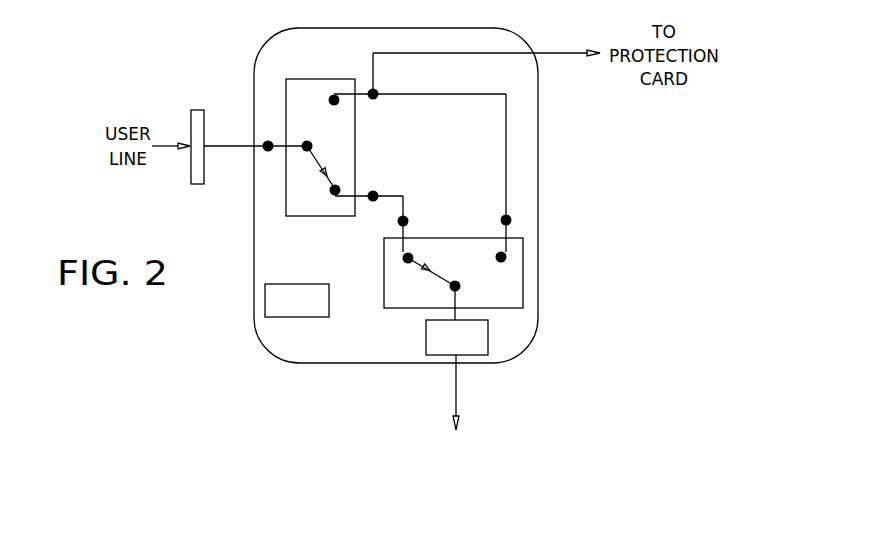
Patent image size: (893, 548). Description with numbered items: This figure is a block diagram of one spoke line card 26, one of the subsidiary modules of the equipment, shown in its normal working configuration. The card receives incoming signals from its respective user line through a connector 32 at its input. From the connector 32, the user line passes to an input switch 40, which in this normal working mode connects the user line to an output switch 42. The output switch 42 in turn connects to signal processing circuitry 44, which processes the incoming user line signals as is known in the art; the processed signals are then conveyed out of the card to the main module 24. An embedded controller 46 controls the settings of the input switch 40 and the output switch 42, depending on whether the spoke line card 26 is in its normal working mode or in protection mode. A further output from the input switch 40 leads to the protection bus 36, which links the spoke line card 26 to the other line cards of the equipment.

The spoke line card 26 is at (270, 42).
The connector 32 is at (205, 124).
The protection bus 36 is at (543, 53).
The input switch 40 is at (320, 216).
The output switch 42 is at (386, 308).
The signal processing circuitry 44 is at (488, 352).
The embedded controller 46 is at (328, 282).
The main module 24 is at (461, 432).